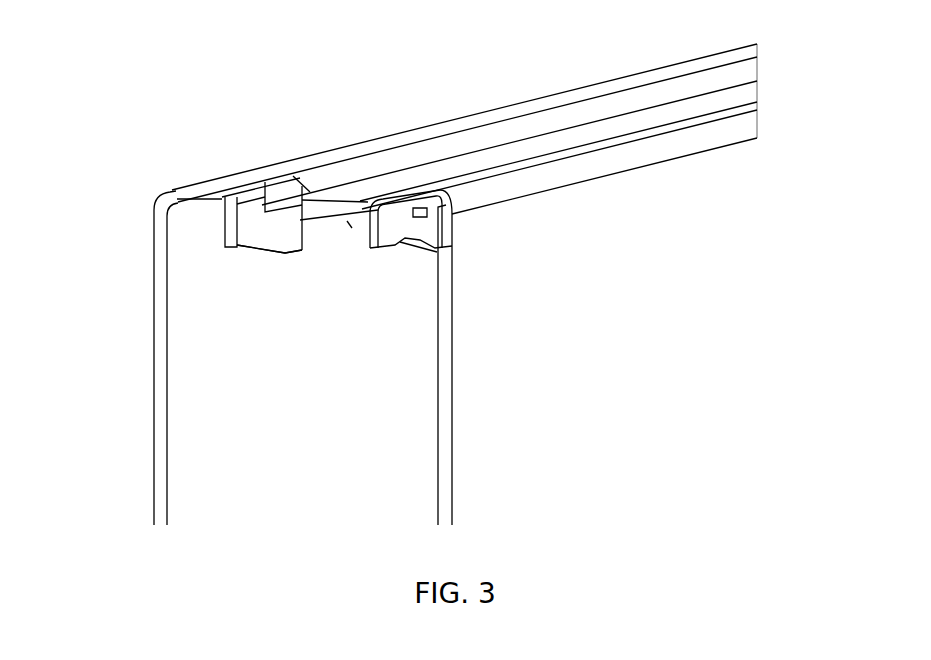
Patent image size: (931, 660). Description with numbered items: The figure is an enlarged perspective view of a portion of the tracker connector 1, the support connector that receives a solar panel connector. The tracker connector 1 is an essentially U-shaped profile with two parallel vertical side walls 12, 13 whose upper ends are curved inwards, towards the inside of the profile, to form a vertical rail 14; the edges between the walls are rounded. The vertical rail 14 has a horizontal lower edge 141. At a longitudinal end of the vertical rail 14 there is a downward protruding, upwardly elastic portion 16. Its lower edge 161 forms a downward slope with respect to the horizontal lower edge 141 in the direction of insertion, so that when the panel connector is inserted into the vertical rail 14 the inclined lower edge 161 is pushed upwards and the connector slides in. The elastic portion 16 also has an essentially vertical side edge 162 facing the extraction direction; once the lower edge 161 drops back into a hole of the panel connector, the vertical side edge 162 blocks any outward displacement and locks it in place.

The tracker connector 1 is at (240, 130).
The vertical side wall 12 is at (653, 266).
The vertical side wall 13 is at (193, 431).
The vertical rail 14 is at (360, 195).
The horizontal lower edge 141 is at (347, 221).
The elastic portion 16 is at (225, 238).
The lower edge 161 is at (280, 251).
The vertical side edge 162 is at (303, 250).